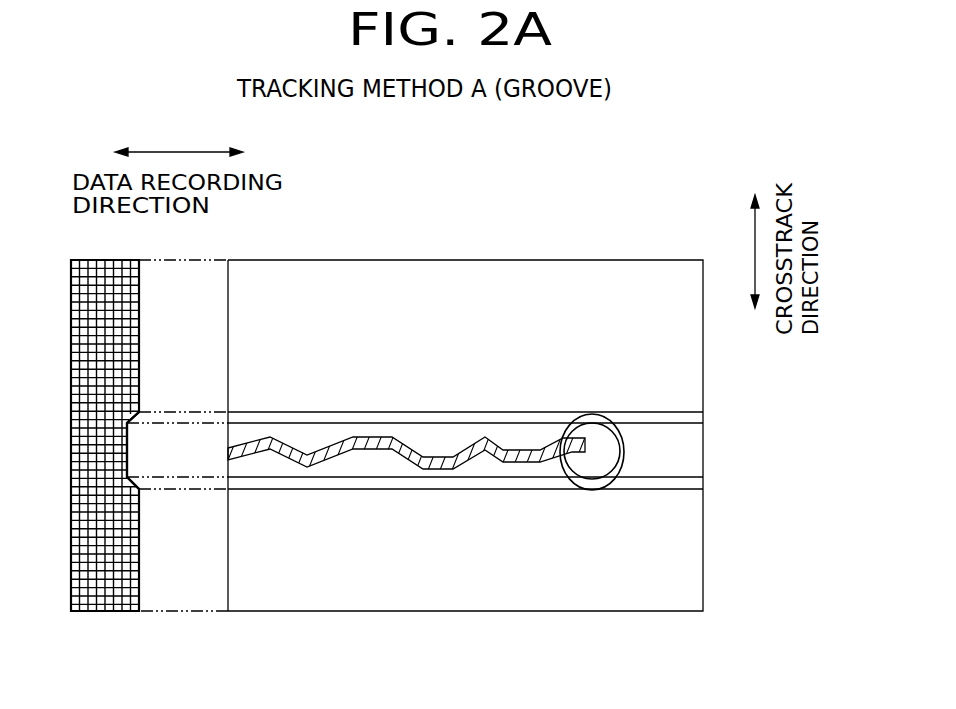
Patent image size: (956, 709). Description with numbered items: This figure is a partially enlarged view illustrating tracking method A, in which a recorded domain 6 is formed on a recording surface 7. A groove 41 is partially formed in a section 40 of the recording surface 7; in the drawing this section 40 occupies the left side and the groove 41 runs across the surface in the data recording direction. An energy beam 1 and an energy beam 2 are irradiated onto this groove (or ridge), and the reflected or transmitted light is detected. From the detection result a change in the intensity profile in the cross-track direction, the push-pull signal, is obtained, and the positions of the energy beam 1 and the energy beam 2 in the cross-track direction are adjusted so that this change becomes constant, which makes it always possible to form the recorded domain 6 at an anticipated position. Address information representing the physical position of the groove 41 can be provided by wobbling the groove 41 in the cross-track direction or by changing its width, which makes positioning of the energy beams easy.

The recording surface 7 is at (571, 283).
The section 40 is at (128, 285).
The groove 41 is at (128, 447).
The recorded domain 6 is at (392, 437).
The energy beam 2 is at (615, 415).
The energy beam 1 is at (573, 482).